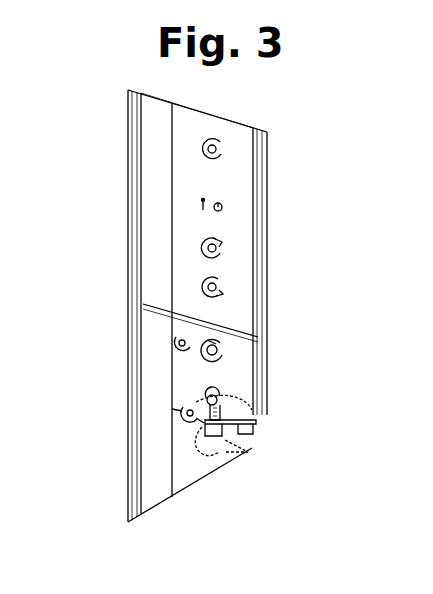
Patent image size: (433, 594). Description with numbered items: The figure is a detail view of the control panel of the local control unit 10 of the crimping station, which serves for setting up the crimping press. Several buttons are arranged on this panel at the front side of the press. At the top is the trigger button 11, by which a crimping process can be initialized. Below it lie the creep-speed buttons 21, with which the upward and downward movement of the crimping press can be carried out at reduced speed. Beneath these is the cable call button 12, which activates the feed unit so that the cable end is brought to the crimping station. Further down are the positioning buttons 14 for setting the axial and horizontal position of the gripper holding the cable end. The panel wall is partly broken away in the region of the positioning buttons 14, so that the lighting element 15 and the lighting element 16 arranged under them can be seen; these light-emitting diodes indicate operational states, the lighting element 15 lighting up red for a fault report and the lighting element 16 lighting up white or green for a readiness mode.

The local control unit 10 is at (170, 296).
The trigger button 11 is at (218, 145).
The creep-speed buttons 21 is at (222, 290).
The cable call button 12 is at (222, 350).
The positioning buttons 14 is at (219, 397).
The lighting element 15 is at (218, 438).
The lighting element 16 is at (249, 432).